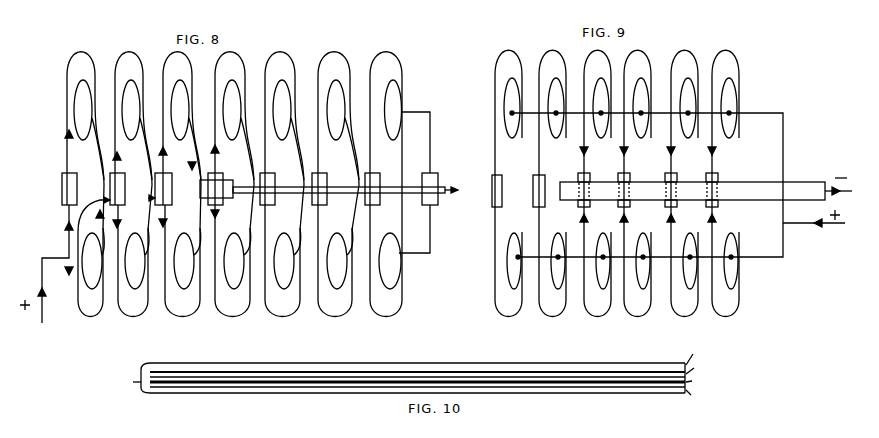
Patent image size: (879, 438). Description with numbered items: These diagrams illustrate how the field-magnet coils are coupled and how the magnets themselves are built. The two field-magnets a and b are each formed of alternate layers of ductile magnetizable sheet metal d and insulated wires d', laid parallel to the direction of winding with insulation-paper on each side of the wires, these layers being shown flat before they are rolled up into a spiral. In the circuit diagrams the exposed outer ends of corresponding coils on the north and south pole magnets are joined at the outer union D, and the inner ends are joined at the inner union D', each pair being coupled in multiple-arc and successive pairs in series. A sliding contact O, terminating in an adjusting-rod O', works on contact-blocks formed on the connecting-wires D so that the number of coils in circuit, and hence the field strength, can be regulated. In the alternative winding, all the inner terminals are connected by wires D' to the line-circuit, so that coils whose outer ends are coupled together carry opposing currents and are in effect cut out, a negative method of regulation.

In FIG. 8, the outer union D is at (65, 187).
In FIG. 9, the outer union D is at (500, 183).
In FIG. 8, the inner union D' is at (113, 130).
In FIG. 9, the inner union D' is at (677, 178).
In FIG. 8, the contact O is at (329, 189).
In FIG. 9, the contact O is at (706, 190).
In FIG. 8, the adjusting-rod O' is at (418, 182).
In FIG. 8, the field-magnet a is at (312, 53).
In FIG. 9, the field-magnet a is at (675, 48).
In FIG. 8, the field-magnet b is at (312, 321).
In FIG. 9, the field-magnet b is at (622, 261).
In FIG. 10, the ductile magnetizable metal d is at (443, 376).
In FIG. 10, the insulated wires d' is at (409, 401).